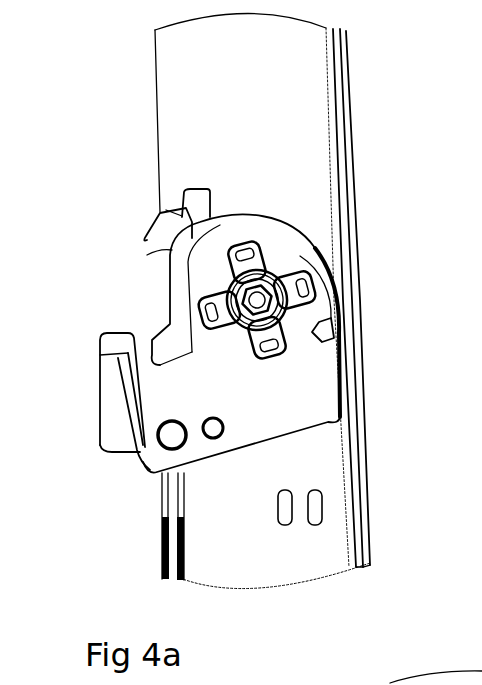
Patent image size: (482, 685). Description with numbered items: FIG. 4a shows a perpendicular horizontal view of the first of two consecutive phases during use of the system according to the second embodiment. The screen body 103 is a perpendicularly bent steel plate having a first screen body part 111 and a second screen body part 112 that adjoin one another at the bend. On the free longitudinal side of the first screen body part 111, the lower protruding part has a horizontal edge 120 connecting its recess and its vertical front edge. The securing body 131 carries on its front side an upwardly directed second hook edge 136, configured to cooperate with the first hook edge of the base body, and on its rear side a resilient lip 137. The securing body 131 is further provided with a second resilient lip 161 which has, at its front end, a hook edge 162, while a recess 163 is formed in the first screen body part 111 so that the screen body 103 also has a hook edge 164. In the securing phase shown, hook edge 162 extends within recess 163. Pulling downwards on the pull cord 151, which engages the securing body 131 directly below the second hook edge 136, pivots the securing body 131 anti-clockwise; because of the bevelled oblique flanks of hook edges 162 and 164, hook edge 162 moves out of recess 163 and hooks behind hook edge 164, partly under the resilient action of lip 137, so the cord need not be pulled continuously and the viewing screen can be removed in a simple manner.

The screen body 103 is at (405, 83).
The first screen body part 111 is at (267, 121).
The second screen body part 112 is at (351, 210).
The horizontal edge 120 is at (117, 333).
The securing body 131 is at (280, 406).
The second hook edge 136 is at (107, 355).
The resilient lip 137 is at (347, 352).
The pull cord 151 is at (172, 528).
The second resilient lip 161 is at (163, 203).
The hook edge 162 is at (147, 255).
The recess 163 is at (193, 192).
The hook edge 164 is at (173, 217).